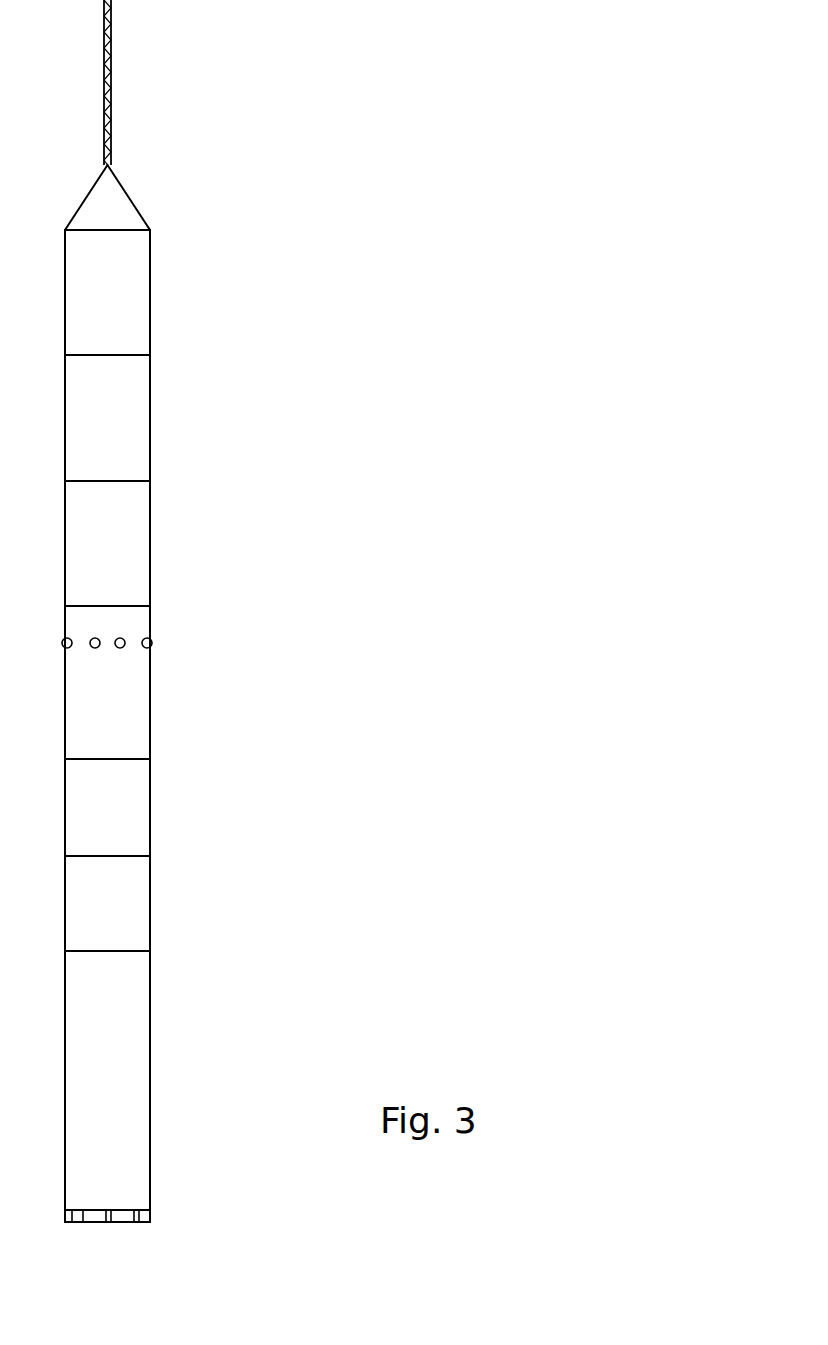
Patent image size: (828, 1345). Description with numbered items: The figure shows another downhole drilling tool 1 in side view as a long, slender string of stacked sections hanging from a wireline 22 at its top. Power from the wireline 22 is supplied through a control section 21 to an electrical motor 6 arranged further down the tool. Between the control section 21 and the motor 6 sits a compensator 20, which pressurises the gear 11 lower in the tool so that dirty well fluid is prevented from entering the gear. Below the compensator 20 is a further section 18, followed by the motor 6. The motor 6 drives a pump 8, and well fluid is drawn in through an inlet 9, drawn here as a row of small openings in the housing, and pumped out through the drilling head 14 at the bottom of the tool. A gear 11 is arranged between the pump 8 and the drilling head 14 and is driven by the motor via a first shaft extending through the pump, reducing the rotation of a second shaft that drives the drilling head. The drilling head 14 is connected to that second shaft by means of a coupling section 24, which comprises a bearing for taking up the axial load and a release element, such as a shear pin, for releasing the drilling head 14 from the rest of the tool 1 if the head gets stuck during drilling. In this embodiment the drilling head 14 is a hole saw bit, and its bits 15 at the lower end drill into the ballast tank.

The drilling tool 1 is at (385, 55).
The wireline 22 is at (107, 75).
The control section 21 is at (127, 278).
The compensator 20 is at (136, 401).
The section 18 is at (130, 509).
The electrical motor 6 is at (139, 560).
The inlet 9 is at (152, 643).
The pump 8 is at (135, 711).
The gear 11 is at (129, 836).
The coupling section 24 is at (127, 904).
The drilling head 14 is at (123, 1053).
The bits 15 is at (123, 1220).